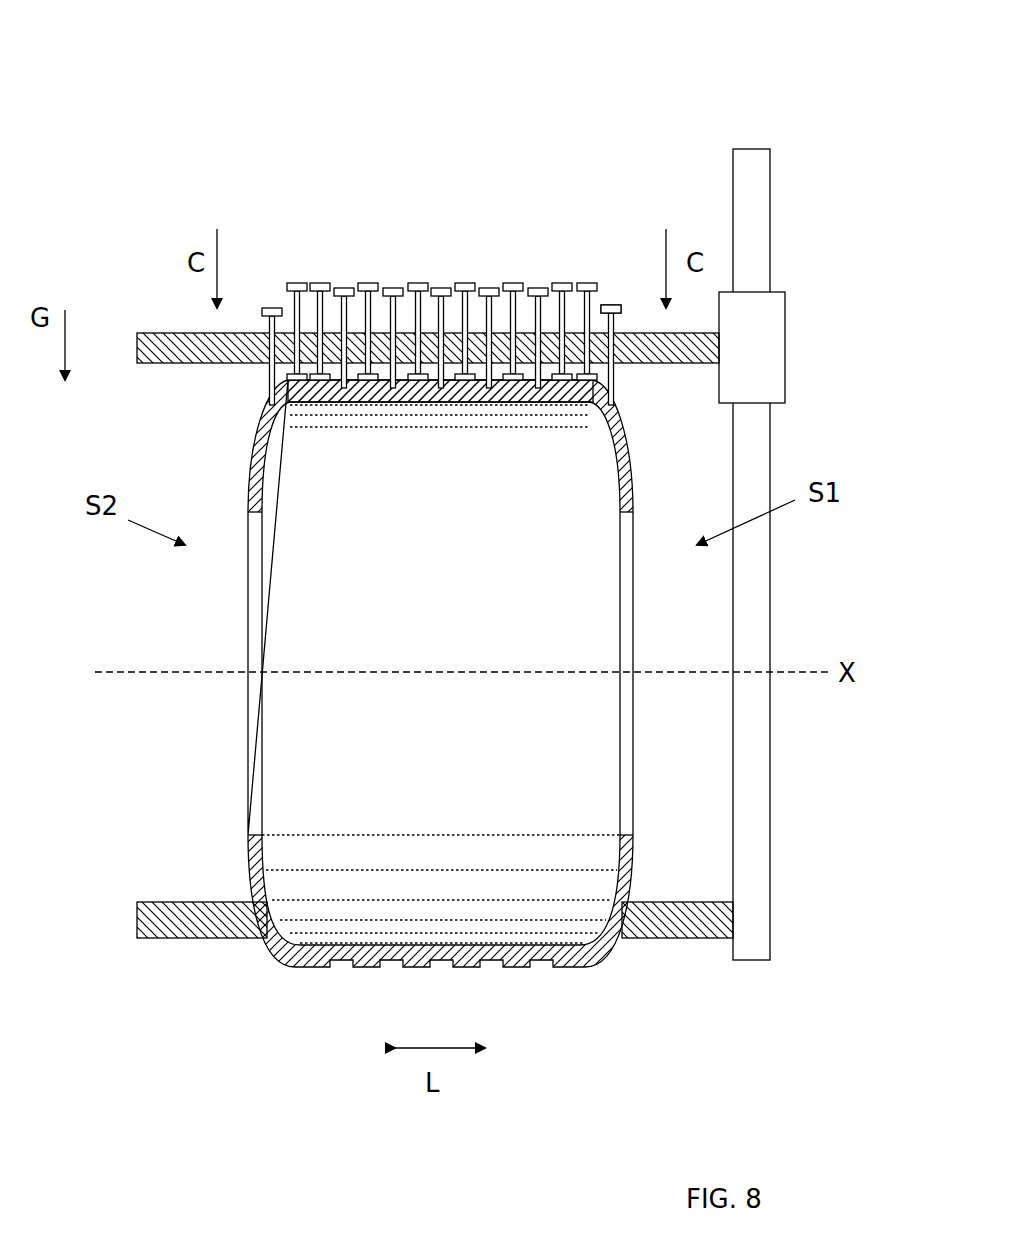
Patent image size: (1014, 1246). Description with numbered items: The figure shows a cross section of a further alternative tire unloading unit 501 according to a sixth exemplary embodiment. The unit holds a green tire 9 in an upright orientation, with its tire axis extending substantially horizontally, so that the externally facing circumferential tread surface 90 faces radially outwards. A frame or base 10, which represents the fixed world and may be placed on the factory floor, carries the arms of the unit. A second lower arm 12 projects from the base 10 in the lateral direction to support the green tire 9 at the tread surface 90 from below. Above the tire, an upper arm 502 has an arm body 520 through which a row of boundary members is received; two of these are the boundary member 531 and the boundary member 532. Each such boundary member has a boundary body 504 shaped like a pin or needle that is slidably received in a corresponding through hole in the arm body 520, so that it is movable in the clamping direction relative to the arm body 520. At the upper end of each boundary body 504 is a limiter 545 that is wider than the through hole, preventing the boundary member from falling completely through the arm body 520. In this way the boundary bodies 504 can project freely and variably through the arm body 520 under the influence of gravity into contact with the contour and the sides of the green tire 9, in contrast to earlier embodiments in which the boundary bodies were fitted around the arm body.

The tire unloading unit 501 is at (142, 107).
The upper arm 502 is at (605, 148).
The limiter 545 is at (617, 305).
The base 10 is at (757, 208).
The arm body 520 is at (137, 350).
The boundary member 532 is at (273, 390).
The boundary body 504 is at (610, 377).
The boundary member 531 is at (617, 400).
The green tire 9 is at (268, 620).
The tread surface 90 is at (322, 968).
The second lower arm 12 is at (655, 938).